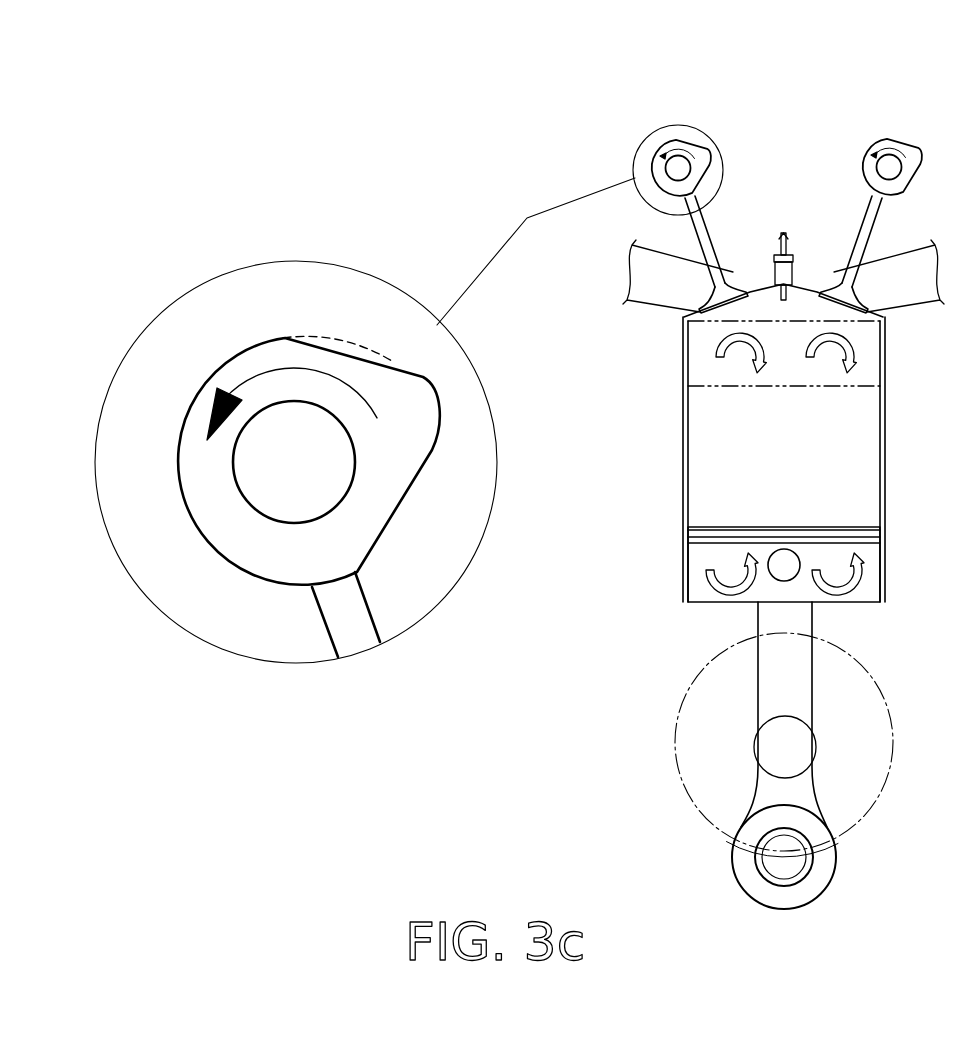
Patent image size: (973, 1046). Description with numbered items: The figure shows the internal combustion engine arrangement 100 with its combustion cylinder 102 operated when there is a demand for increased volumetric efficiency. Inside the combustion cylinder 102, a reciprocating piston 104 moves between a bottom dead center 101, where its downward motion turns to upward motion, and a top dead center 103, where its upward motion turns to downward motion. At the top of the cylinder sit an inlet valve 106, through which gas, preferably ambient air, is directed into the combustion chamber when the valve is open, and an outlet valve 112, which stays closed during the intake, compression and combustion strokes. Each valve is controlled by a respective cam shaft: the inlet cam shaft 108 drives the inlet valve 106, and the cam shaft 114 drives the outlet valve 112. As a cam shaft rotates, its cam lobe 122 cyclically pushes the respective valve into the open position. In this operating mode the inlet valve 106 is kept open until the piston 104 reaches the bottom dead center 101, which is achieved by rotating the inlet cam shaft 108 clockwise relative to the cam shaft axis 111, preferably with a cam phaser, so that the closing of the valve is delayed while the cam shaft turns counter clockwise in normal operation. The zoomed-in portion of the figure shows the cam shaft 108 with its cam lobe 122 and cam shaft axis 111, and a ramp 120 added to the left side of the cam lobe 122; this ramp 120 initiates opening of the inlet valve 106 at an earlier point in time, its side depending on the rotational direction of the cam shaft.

The internal combustion engine arrangement 100 is at (850, 97).
The bottom dead center 101 is at (887, 558).
The combustion cylinder 102 is at (682, 443).
The top dead center 103 is at (885, 347).
The piston 104 is at (686, 560).
The inlet valve 106 is at (748, 290).
The inlet cam shaft 108 is at (665, 138).
The cam shaft axis 111 is at (679, 162).
The outlet valve 112 is at (818, 288).
The cam shaft 114 is at (903, 143).
The ramp 120 is at (343, 338).
The cam lobe 122 is at (405, 397).